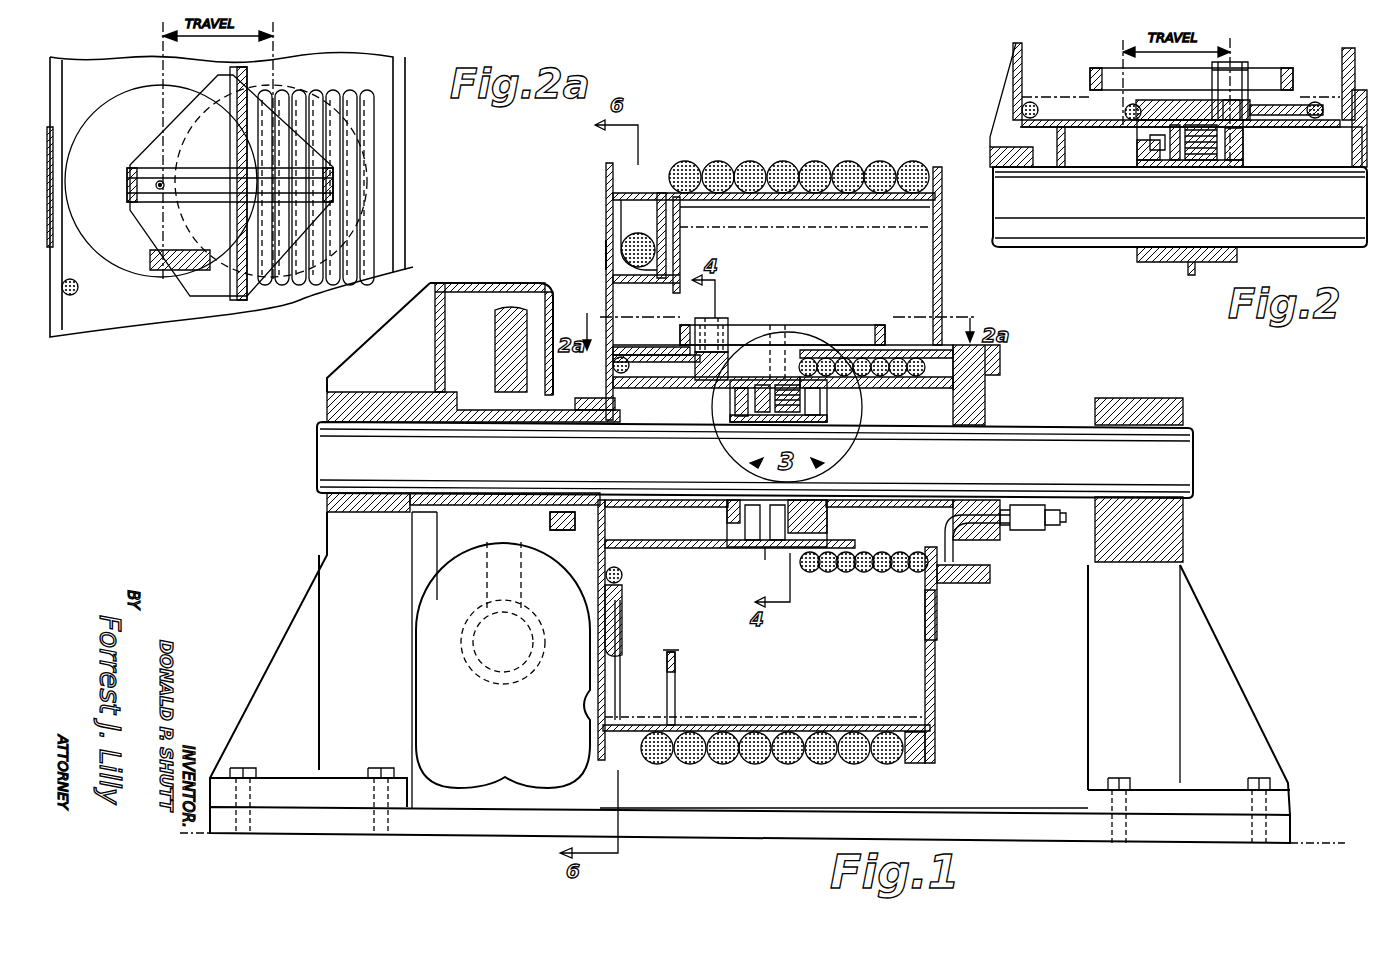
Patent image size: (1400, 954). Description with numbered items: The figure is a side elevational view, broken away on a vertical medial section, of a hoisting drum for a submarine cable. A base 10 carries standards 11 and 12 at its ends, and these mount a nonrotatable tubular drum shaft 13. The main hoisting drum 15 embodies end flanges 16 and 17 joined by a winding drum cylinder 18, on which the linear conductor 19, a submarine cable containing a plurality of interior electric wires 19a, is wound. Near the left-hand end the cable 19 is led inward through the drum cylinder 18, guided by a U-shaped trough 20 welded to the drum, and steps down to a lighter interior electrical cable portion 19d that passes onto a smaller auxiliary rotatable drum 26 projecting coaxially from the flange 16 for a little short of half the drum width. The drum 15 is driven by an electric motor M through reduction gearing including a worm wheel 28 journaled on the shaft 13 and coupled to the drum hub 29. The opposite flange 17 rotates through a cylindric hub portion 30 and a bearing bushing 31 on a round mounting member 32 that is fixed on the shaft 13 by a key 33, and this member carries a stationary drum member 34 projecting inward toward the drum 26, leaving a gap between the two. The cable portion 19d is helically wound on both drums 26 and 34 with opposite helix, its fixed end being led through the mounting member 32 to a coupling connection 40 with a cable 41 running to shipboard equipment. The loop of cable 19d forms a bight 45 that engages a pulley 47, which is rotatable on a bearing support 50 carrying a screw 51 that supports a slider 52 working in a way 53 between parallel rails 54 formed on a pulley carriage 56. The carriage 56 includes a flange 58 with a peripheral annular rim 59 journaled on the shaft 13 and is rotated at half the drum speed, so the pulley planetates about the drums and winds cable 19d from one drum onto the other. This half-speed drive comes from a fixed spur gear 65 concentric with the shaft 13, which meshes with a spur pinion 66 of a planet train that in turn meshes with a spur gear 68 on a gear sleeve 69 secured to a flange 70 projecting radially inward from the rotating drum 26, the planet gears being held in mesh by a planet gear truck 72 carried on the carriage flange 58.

In FIG. 1, the base 10 is at (1285, 829).
In FIG. 1, the standard 11 is at (322, 548).
In FIG. 1, the standard 12 is at (1170, 568).
In FIG. 1, the tubular drum shaft 13 is at (1012, 432).
In FIG. 2, the tubular drum shaft 13 is at (1285, 250).
In FIG. 1, the main hoisting drum 15 is at (600, 208).
In FIG. 1, the end flange 16 is at (602, 258).
In FIG. 1, the end flange 17 is at (945, 265).
In FIG. 1, the winding drum cylinder 18 is at (838, 205).
In FIG. 1, the linear conductor 19 is at (735, 160).
In FIG. 1, the interior electric wires 19a is at (692, 160).
In FIG. 1, the interior electrical cable portion 19d is at (625, 582).
In FIG. 2A, the interior electrical cable portion 19d is at (320, 292).
In FIG. 1, the U-shaped trough 20 is at (617, 222).
In FIG. 1, the auxiliary rotatable drum 26 is at (622, 390).
In FIG. 2, the auxiliary rotatable drum 26 is at (1062, 132).
In FIG. 1, the worm wheel 28 is at (495, 322).
In FIG. 1, the drum hub 29 is at (590, 396).
In FIG. 1, the cylindric hub portion 30 is at (975, 586).
In FIG. 1, the bearing bushing 31 is at (945, 592).
In FIG. 1, the round mounting member 32 is at (1000, 386).
In FIG. 1, the key 33 is at (985, 436).
In FIG. 1, the stationary drum member 34 is at (884, 390).
In FIG. 2, the stationary drum member 34 is at (1318, 132).
In FIG. 1, the coupling connection 40 is at (1028, 535).
In FIG. 1, the cable 41 is at (1052, 530).
In FIG. 2A, the bight 45 is at (138, 275).
In FIG. 1, the pulley 47 is at (630, 360).
In FIG. 2, the pulley 47 is at (1313, 100).
In FIG. 2A, the pulley 47 is at (155, 272).
In FIG. 1, the bearing support 50 is at (700, 382).
In FIG. 2, the bearing support 50 is at (1250, 100).
In FIG. 1, the screw 51 is at (720, 322).
In FIG. 2, the screw 51 is at (1242, 72).
In FIG. 2, the slider 52 is at (1218, 78).
In FIG. 2A, the slider 52 is at (160, 190).
In FIG. 1, the way 53 is at (770, 330).
In FIG. 2A, the way 53 is at (200, 205).
In FIG. 1, the parallel rails 54 is at (830, 327).
In FIG. 2, the parallel rails 54 is at (1112, 78).
In FIG. 2A, the parallel rails 54 is at (190, 168).
In FIG. 2A, the pulley carriage 56 is at (260, 96).
In FIG. 1, the flange 58 is at (772, 550).
In FIG. 1, the peripheral annular rim 59 is at (727, 512).
In FIG. 2, the fixed spur gear 65 is at (1200, 165).
In FIG. 1, the spur pinion 66 is at (800, 420).
In FIG. 2, the spur pinion 66 is at (1212, 162).
In FIG. 1, the spur gear 68 is at (765, 422).
In FIG. 2, the spur gear 68 is at (1185, 168).
In FIG. 1, the gear sleeve 69 is at (780, 428).
In FIG. 2, the gear sleeve 69 is at (1150, 165).
In FIG. 1, the flange 70 is at (733, 394).
In FIG. 2, the flange 70 is at (1137, 147).
In FIG. 2, the planet gear truck 72 is at (1245, 145).
In FIG. 1, the electric motor M is at (445, 773).